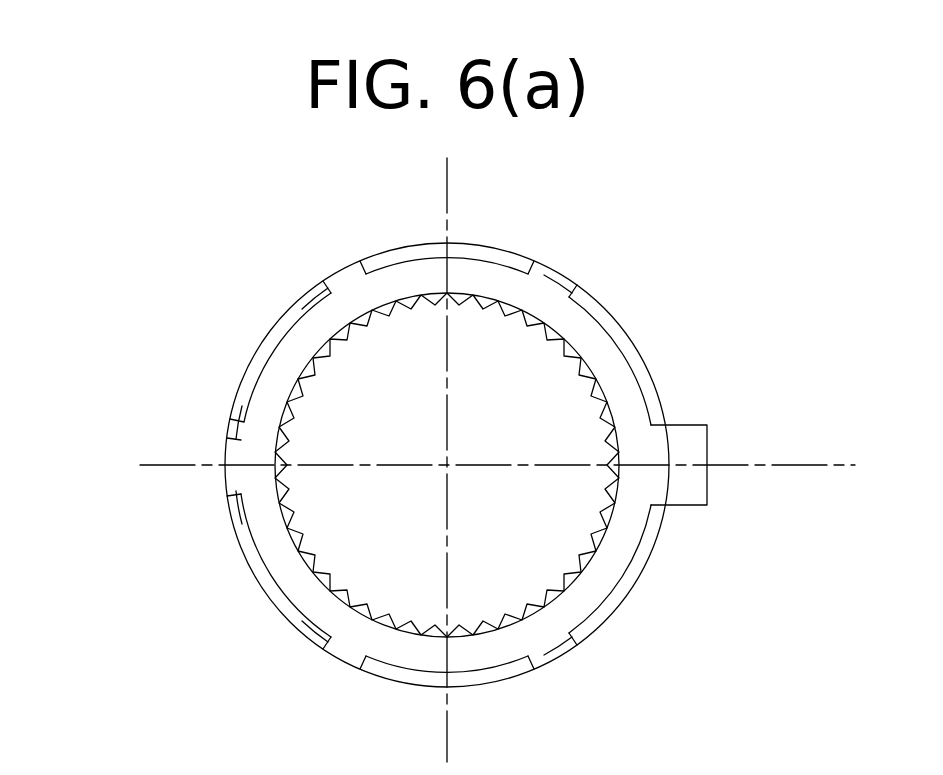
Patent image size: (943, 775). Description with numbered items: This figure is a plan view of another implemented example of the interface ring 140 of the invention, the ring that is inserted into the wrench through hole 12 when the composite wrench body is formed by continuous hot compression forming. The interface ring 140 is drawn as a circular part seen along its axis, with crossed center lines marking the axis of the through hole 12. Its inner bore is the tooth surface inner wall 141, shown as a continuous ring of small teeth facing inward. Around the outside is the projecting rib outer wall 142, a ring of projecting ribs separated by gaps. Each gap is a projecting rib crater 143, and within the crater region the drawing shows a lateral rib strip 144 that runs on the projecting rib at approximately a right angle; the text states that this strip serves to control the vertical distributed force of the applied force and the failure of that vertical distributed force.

The wrench through hole 12 is at (447, 465).
The interface ring 140 is at (255, 443).
The tooth surface inner wall 141 is at (280, 509).
The projecting rib outer wall 142 is at (337, 272).
The projecting rib crater 143 is at (322, 299).
The lateral rib strip 144 is at (251, 361).